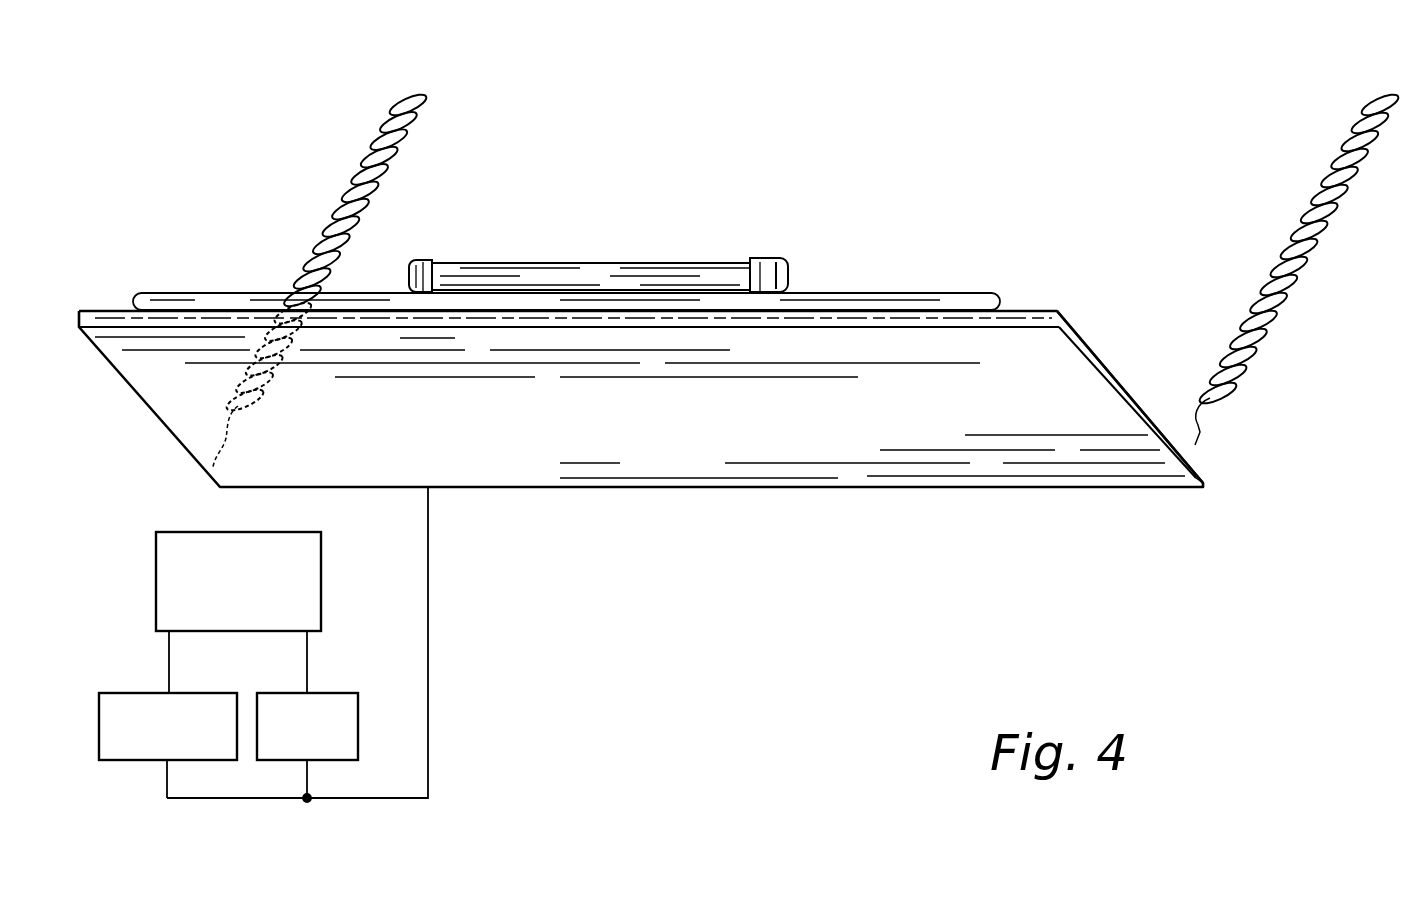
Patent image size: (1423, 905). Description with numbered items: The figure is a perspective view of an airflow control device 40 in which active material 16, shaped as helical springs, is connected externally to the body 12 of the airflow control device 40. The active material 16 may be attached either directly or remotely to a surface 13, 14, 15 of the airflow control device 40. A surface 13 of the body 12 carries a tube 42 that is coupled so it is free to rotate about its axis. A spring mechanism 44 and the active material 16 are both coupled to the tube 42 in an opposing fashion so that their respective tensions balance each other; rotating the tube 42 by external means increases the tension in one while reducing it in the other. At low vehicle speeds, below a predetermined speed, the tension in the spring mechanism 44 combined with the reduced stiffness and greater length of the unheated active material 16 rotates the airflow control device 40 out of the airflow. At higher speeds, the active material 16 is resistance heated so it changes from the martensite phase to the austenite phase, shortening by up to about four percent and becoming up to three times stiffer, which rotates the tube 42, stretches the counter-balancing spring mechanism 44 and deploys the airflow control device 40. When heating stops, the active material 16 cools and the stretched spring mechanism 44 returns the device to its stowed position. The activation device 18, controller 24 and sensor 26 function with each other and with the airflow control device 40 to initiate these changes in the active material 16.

The airflow control device 40 is at (1110, 120).
The active material 16 is at (357, 165).
The spring mechanism 44 is at (604, 267).
The tube 42 is at (890, 293).
The surface 13 is at (1090, 343).
The surface 14 is at (1158, 415).
The body 12 is at (157, 418).
The surface 15 is at (613, 463).
The controller 24 is at (156, 567).
The activation device 18 is at (138, 693).
The sensor 26 is at (334, 693).